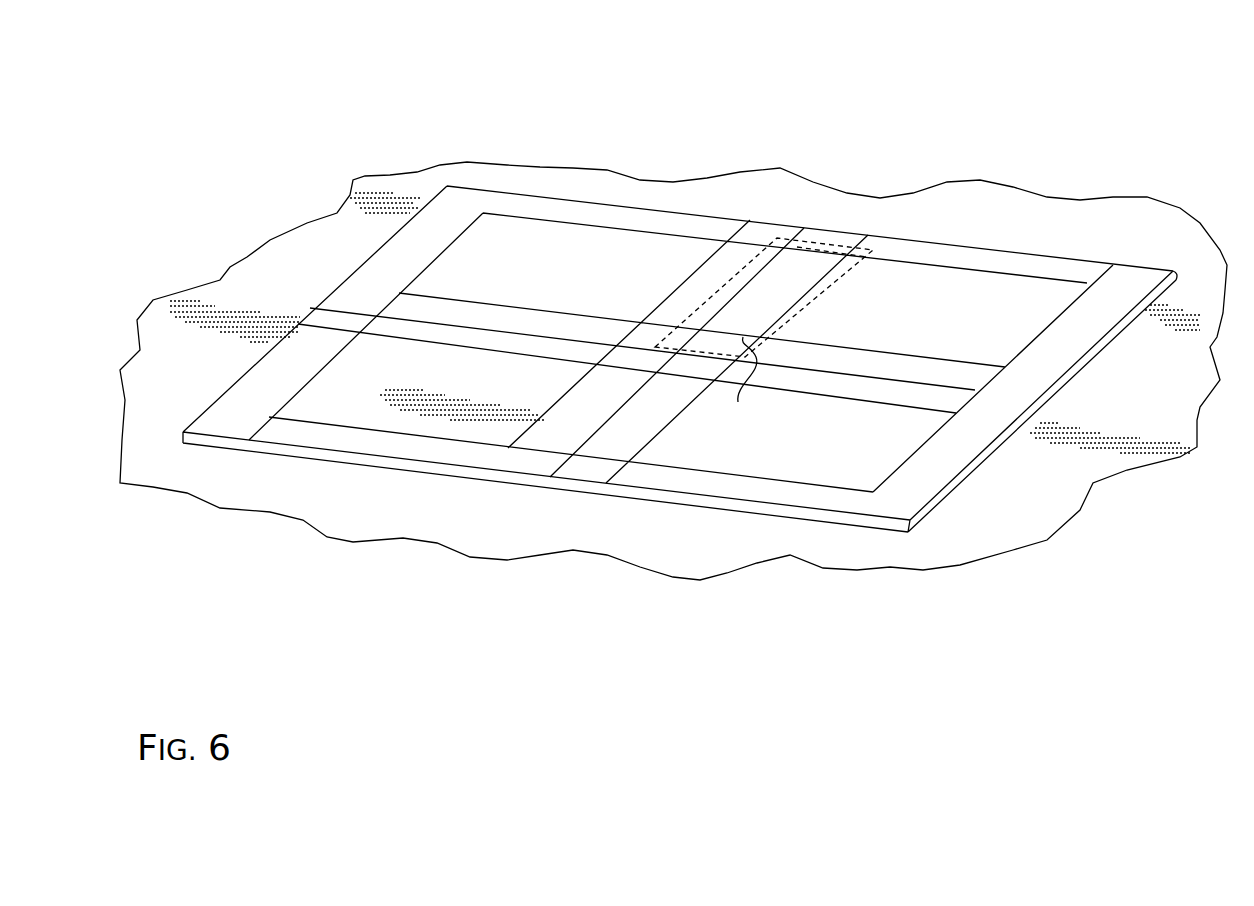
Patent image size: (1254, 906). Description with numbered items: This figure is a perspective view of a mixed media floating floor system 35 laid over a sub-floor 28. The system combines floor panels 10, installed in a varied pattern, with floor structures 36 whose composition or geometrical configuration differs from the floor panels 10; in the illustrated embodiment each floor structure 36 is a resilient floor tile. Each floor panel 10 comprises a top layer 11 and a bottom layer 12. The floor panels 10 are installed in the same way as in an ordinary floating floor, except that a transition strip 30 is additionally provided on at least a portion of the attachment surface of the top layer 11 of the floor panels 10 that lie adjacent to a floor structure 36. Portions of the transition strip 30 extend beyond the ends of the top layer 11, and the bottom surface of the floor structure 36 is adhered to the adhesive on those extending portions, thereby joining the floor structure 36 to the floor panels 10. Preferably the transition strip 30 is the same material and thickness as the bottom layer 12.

The floor panel 10 is at (472, 196).
The top layer 11 is at (741, 384).
The bottom layer 12 is at (700, 288).
The sub-floor 28 is at (1117, 467).
The transition strip 30 is at (815, 240).
The mixed media floating floor system 35 is at (1028, 142).
The floor structure 36 is at (572, 245).